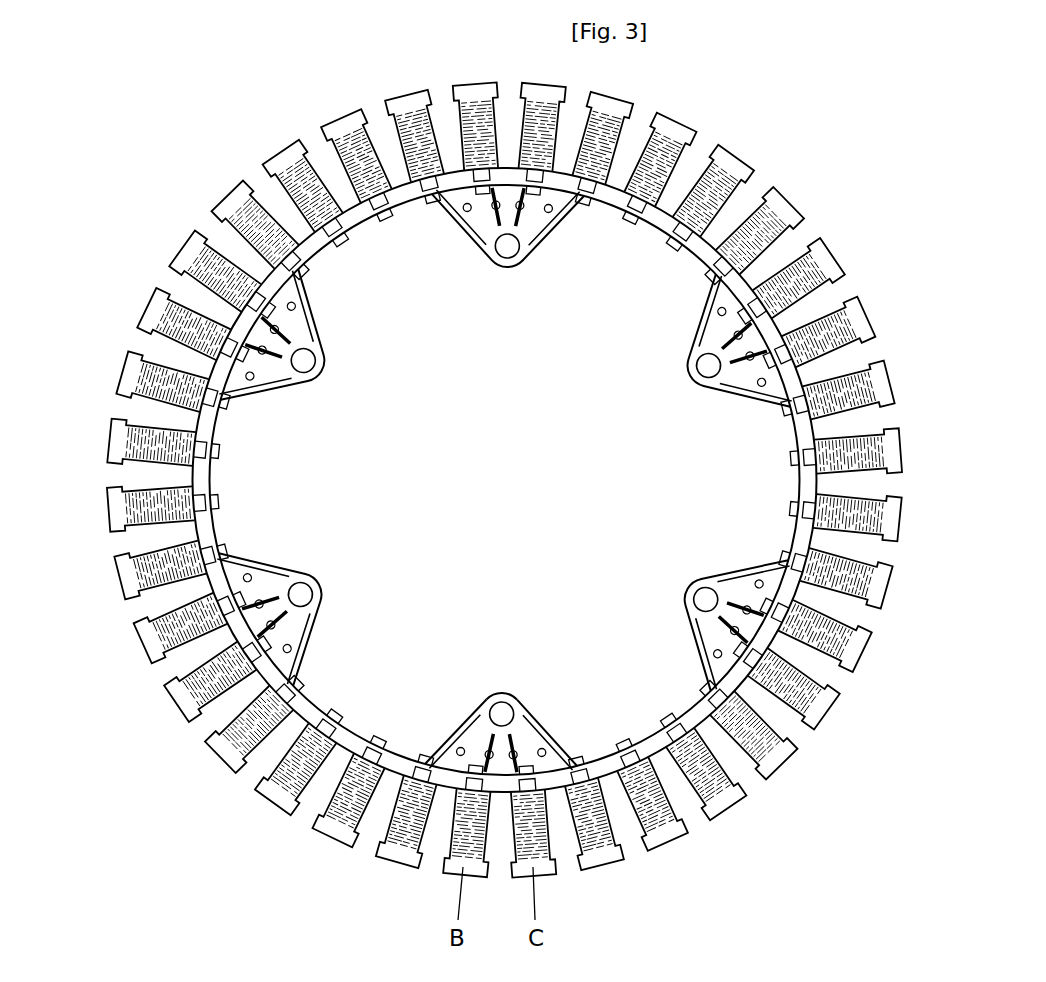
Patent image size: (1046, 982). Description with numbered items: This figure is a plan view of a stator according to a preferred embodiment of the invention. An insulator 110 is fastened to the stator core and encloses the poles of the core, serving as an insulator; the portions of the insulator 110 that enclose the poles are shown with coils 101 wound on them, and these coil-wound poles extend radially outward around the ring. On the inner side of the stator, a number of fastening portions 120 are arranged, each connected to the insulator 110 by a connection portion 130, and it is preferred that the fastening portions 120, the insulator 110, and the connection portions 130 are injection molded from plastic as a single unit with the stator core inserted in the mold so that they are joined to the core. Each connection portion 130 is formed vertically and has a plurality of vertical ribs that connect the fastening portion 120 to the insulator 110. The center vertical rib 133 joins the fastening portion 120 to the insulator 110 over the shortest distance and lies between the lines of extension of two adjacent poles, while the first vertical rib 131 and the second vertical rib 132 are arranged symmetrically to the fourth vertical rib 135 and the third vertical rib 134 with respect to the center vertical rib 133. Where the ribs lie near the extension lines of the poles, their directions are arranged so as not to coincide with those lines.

The coil 101 is at (697, 805).
The insulator 110 is at (778, 484).
The fastening portion 120 is at (490, 677).
The connection portion 130 is at (435, 723).
The first vertical rib 131 is at (428, 742).
The second vertical rib 132 is at (463, 722).
The center vertical rib 133 is at (550, 738).
The third vertical rib 134 is at (535, 723).
The fourth vertical rib 135 is at (540, 727).